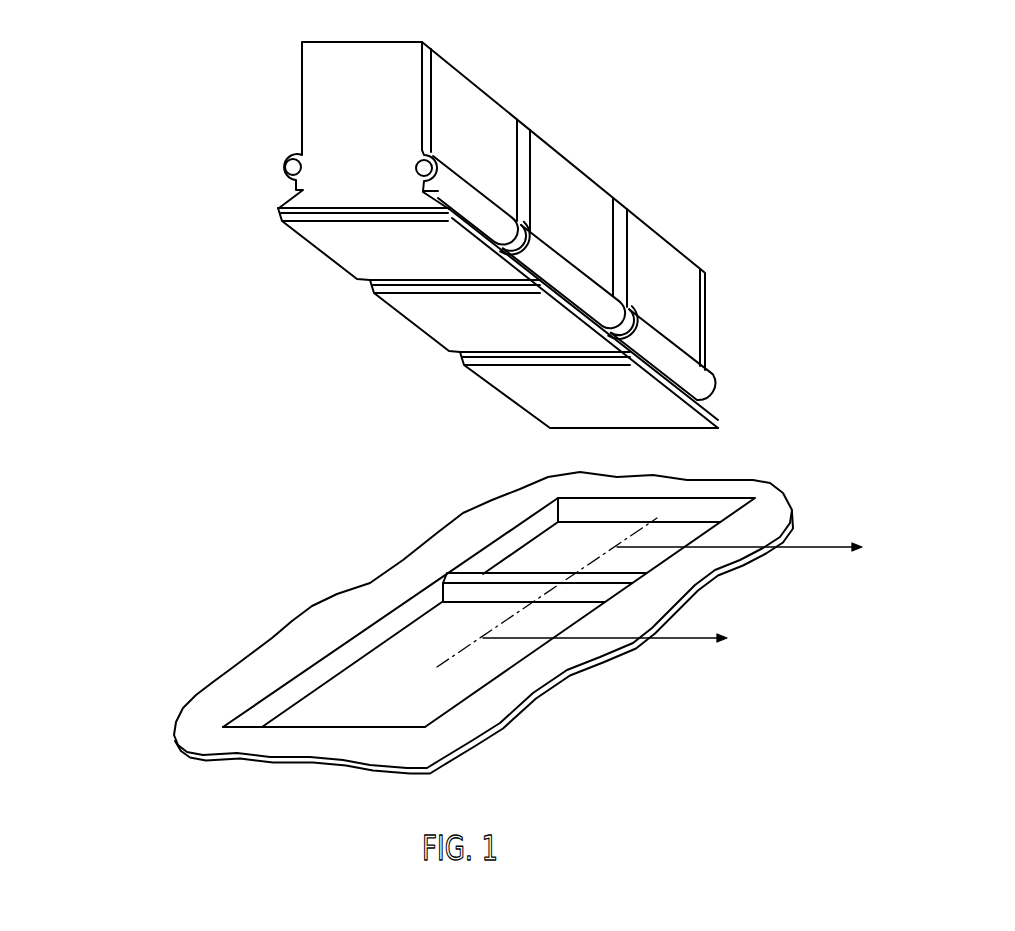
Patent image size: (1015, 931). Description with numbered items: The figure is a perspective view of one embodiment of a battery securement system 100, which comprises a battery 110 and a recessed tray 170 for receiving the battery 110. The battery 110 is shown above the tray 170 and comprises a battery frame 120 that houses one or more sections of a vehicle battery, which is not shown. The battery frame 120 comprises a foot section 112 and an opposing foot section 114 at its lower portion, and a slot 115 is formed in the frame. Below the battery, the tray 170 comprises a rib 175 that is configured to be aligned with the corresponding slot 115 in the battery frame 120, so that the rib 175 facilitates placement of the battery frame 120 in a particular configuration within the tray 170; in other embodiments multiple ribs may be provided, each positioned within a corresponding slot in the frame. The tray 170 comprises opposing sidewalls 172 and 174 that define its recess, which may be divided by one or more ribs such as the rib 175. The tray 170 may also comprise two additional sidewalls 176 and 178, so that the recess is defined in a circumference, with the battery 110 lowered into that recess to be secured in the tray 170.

The battery securement system 100 is at (943, 97).
The battery 110 is at (812, 200).
The battery frame 120 is at (568, 183).
The opposing foot section 114 is at (282, 206).
The slot 115 is at (468, 360).
The foot section 112 is at (710, 413).
The recessed tray 170 is at (334, 553).
The sidewall 172 is at (702, 510).
The rib 175 is at (617, 583).
The additional sidewall 178 is at (303, 683).
The additional sidewall 176 is at (490, 683).
The sidewall 174 is at (344, 727).